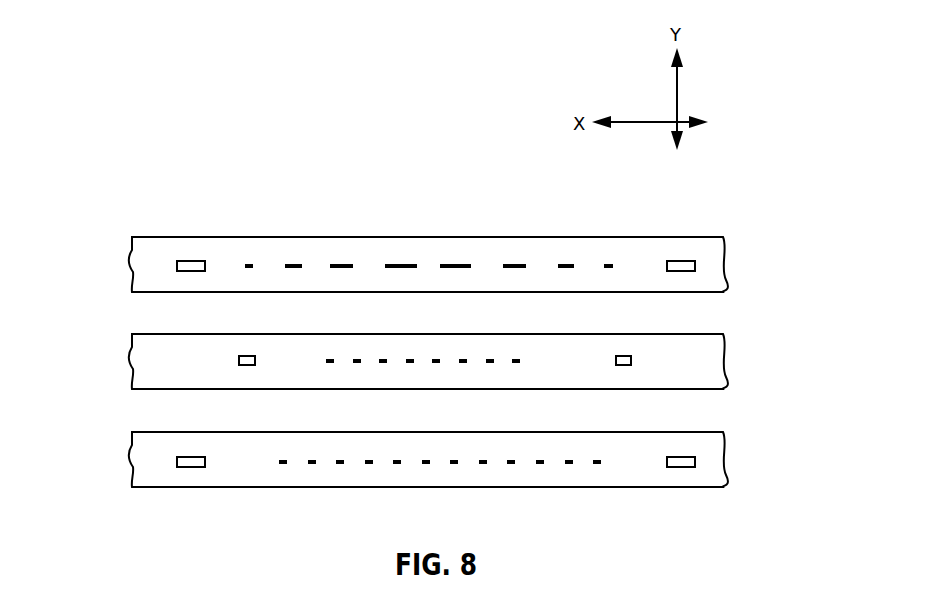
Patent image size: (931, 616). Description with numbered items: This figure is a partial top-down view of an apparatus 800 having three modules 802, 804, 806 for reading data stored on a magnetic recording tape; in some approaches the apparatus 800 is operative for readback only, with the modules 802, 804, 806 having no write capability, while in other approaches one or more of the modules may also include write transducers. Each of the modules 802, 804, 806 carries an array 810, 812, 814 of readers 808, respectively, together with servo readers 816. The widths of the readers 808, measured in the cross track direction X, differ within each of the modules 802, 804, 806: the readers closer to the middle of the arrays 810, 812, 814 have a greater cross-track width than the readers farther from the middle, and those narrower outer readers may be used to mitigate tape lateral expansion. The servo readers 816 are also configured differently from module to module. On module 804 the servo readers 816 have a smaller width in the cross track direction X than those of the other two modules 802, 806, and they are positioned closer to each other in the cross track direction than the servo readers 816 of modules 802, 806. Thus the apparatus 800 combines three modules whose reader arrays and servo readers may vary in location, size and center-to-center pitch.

The apparatus 800 is at (194, 165).
The module 802 is at (131, 247).
The module 804 is at (131, 345).
The module 806 is at (131, 445).
The readers 808 is at (248, 265).
The array 810 is at (631, 250).
The array 812 is at (513, 340).
The array 814 is at (620, 478).
The servo readers 816 is at (686, 457).